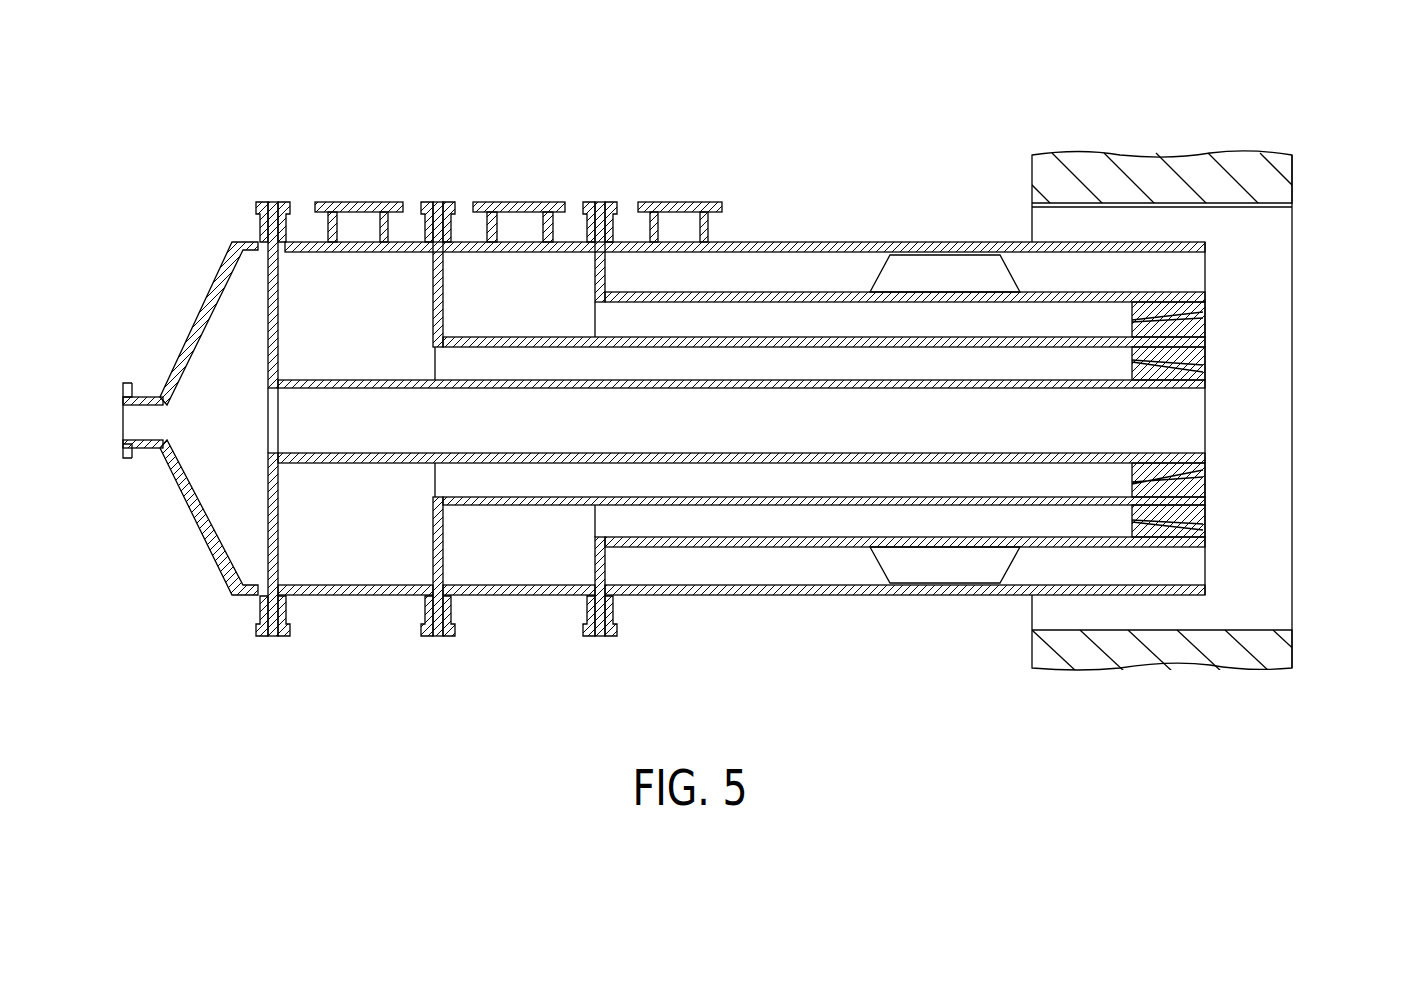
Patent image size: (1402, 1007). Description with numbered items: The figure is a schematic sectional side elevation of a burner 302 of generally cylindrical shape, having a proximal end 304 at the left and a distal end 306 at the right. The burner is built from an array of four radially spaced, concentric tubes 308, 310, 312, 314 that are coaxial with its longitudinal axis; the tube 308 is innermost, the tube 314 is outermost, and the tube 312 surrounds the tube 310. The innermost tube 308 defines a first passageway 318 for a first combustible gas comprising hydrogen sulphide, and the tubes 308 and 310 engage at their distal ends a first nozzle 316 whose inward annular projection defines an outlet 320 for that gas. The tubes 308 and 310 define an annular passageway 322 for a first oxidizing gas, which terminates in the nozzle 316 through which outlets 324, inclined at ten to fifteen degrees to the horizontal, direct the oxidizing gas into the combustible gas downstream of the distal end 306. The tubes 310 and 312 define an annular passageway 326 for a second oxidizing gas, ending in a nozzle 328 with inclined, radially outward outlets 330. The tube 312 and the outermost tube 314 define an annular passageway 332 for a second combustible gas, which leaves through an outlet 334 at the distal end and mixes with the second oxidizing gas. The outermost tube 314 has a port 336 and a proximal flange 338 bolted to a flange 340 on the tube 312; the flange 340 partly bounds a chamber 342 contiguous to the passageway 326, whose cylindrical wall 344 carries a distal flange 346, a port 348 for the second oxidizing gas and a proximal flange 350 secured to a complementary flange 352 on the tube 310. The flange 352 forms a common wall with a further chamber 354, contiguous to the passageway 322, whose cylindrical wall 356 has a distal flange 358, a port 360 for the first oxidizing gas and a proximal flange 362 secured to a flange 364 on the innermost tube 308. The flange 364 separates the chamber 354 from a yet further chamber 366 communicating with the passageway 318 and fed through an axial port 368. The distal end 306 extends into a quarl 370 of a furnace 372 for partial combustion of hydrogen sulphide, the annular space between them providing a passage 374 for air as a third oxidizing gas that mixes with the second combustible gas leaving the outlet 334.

The burner 302 is at (688, 655).
The proximal end 304 is at (176, 550).
The distal end 306 is at (1268, 392).
The innermost tube 308 is at (697, 463).
The tube 310 is at (765, 505).
The tube 312 is at (845, 547).
The outermost tube 314 is at (848, 242).
The first nozzle 316 is at (1205, 483).
The first passageway 318 is at (580, 428).
The outlet 320 is at (1205, 457).
The annular passageway 322 is at (479, 494).
The outlets 324 is at (1205, 368).
The annular passageway 326 is at (659, 333).
The nozzle 328 is at (1205, 297).
The outlets 330 is at (1205, 318).
The annular passageway 332 is at (659, 283).
The outlet 334 is at (1205, 555).
The port 336 is at (677, 212).
The flange 338 is at (618, 202).
The flange 340 is at (597, 637).
The chamber 342 is at (492, 555).
The cylindrical wall 344 is at (510, 597).
The flange 346 is at (583, 622).
The port 348 is at (510, 212).
The flange 350 is at (452, 652).
The flange 352 is at (432, 552).
The chamber 354 is at (334, 522).
The cylindrical wall 356 is at (337, 597).
The flange 358 is at (427, 202).
The port 360 is at (352, 215).
The flange 362 is at (297, 202).
The flange 364 is at (273, 637).
The chamber 366 is at (209, 387).
The axial port 368 is at (130, 423).
The quarl 370 is at (1215, 645).
The furnace 372 is at (1330, 705).
The passage 374 is at (1103, 612).